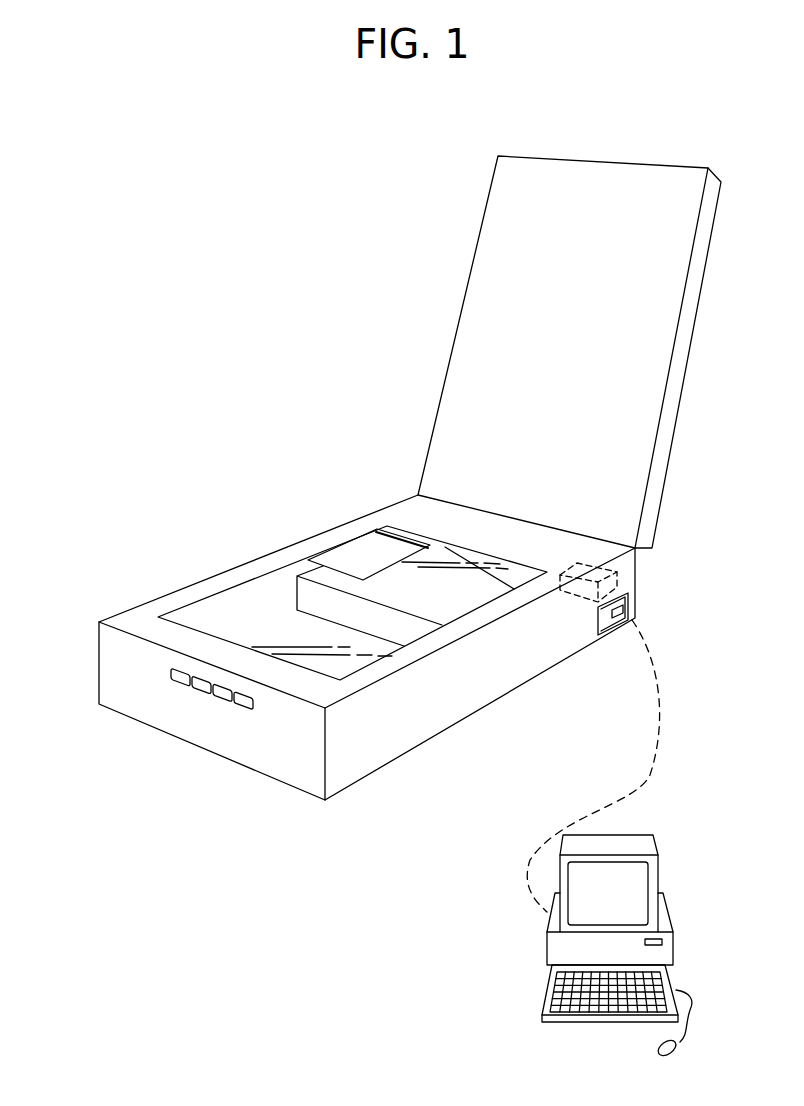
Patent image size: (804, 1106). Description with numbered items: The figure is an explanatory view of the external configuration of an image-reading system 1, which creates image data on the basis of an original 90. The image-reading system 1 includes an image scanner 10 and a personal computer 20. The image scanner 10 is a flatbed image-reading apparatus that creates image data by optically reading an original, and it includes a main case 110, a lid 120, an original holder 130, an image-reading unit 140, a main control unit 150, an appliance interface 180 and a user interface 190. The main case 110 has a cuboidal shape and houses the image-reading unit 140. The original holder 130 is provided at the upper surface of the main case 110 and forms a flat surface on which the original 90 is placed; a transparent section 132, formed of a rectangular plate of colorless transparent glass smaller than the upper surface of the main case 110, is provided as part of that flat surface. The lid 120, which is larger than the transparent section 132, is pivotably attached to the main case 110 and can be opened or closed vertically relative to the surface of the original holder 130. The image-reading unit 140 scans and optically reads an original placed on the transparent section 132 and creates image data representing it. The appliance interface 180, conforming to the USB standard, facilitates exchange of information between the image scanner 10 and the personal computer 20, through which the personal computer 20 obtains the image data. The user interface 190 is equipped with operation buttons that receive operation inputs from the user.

The image-reading system 1 is at (198, 135).
The image scanner 10 is at (198, 307).
The personal computer 20 is at (681, 816).
The original 90 is at (362, 560).
The main case 110 is at (357, 727).
The lid 120 is at (492, 275).
The original holder 130 is at (148, 620).
The transparent section 132 is at (230, 620).
The image-reading unit 140 is at (313, 594).
The main control unit 150 is at (622, 585).
The appliance interface 180 is at (626, 611).
The user interface 190 is at (172, 673).